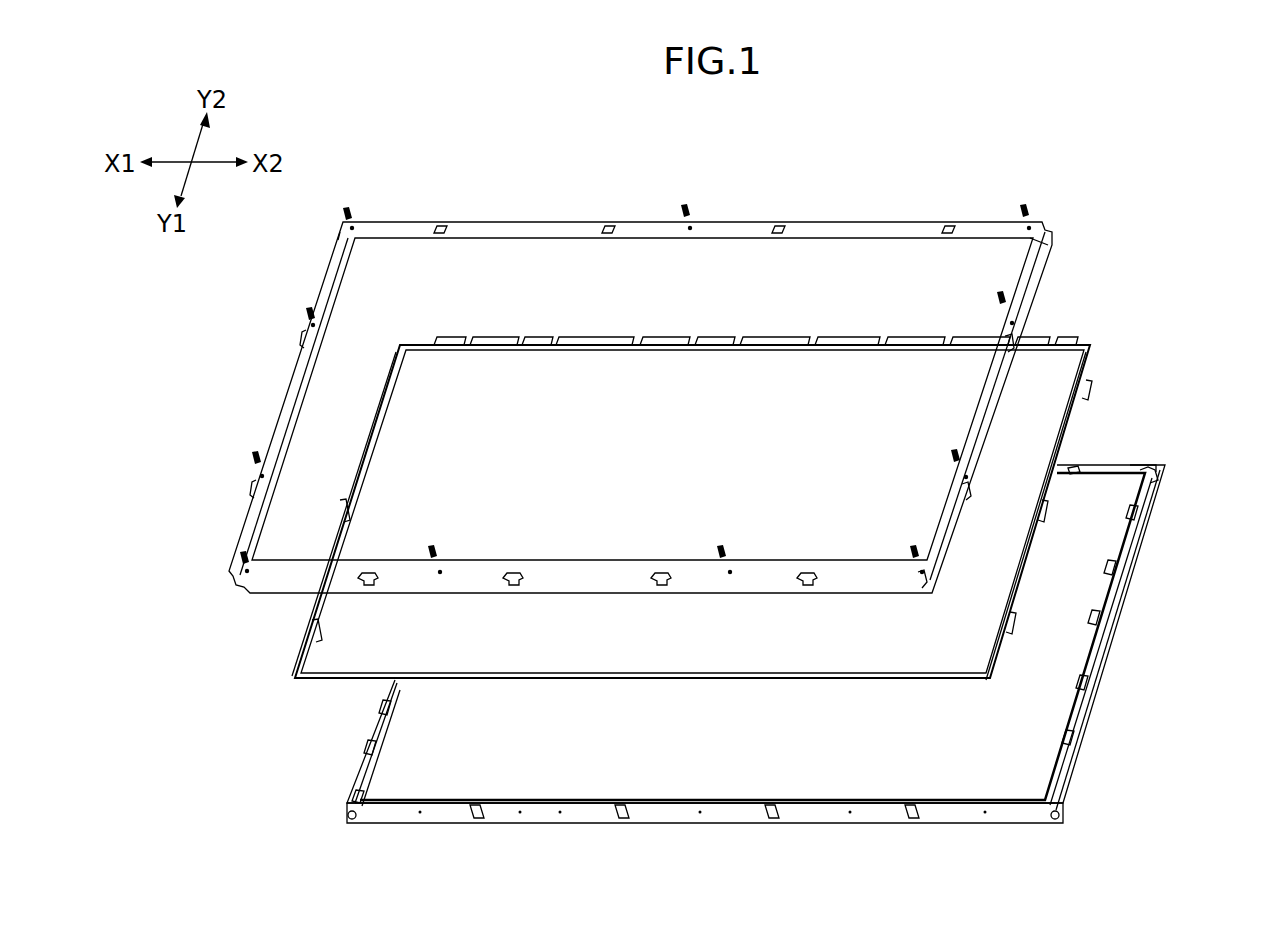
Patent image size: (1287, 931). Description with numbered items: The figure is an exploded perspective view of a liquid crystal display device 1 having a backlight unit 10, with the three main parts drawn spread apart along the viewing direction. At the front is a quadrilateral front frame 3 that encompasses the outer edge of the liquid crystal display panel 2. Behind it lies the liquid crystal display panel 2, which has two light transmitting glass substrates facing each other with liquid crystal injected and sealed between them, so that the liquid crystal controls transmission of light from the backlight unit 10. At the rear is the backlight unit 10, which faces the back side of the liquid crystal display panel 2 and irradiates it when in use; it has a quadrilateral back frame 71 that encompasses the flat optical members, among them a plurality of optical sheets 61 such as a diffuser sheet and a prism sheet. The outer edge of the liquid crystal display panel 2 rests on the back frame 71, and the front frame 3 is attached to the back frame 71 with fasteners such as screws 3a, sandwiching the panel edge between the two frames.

The liquid crystal display device 1 is at (1232, 170).
The front frame 3 is at (1038, 264).
The screw 3a is at (686, 210).
The liquid crystal display panel 2 is at (1087, 376).
The backlight unit 10 is at (1133, 446).
The optical sheets 61 is at (1065, 640).
The back frame 71 is at (1138, 528).